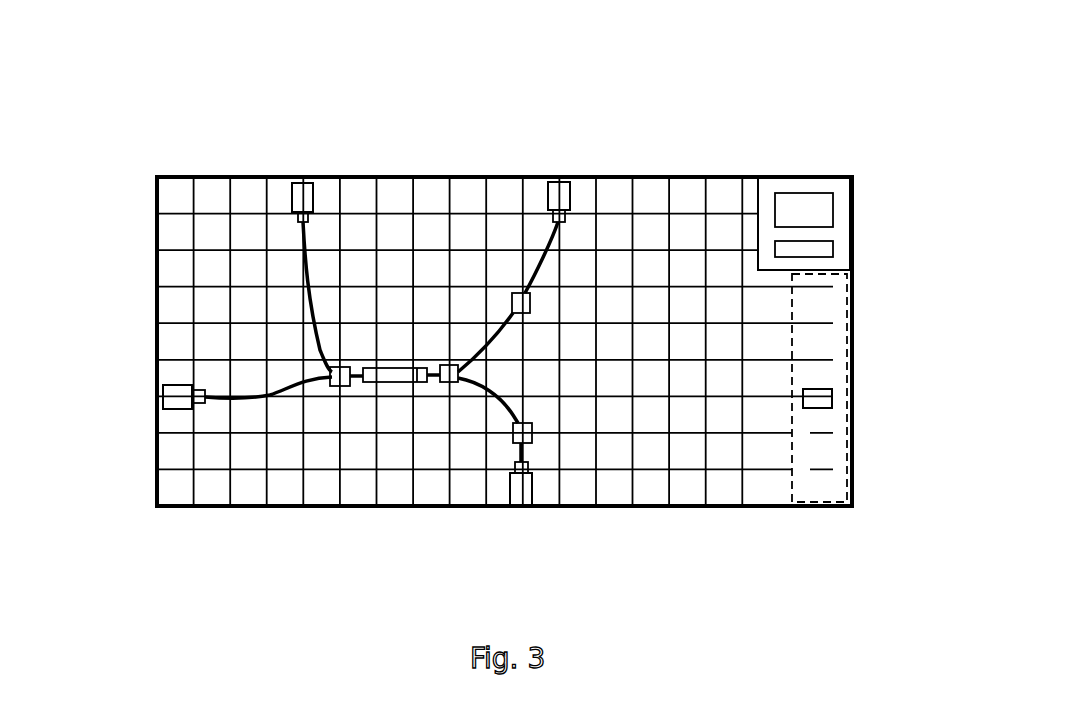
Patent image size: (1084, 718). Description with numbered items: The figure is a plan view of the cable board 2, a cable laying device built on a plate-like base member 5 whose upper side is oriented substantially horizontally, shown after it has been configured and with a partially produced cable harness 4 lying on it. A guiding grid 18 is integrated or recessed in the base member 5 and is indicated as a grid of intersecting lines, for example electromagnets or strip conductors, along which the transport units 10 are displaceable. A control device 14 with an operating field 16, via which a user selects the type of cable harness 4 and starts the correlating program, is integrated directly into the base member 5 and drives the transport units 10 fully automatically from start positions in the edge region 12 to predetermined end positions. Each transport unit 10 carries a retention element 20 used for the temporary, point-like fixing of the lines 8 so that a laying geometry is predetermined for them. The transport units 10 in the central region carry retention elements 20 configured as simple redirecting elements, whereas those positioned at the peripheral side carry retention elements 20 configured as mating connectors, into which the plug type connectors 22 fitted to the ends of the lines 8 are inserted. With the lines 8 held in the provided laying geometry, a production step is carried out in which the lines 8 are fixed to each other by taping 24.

The cable board 2 is at (156, 36).
The cable harness 4 is at (463, 309).
The base member 5 is at (690, 176).
The lines 8 is at (310, 247).
The transport units 10 is at (506, 308).
The retention elements 20 is at (303, 181).
The edge region 12 is at (855, 490).
The control device 14 is at (861, 191).
The operating field 16 is at (837, 248).
The guiding grid 18 is at (190, 240).
The plug type connectors 22 is at (294, 219).
The taping 24 is at (370, 386).